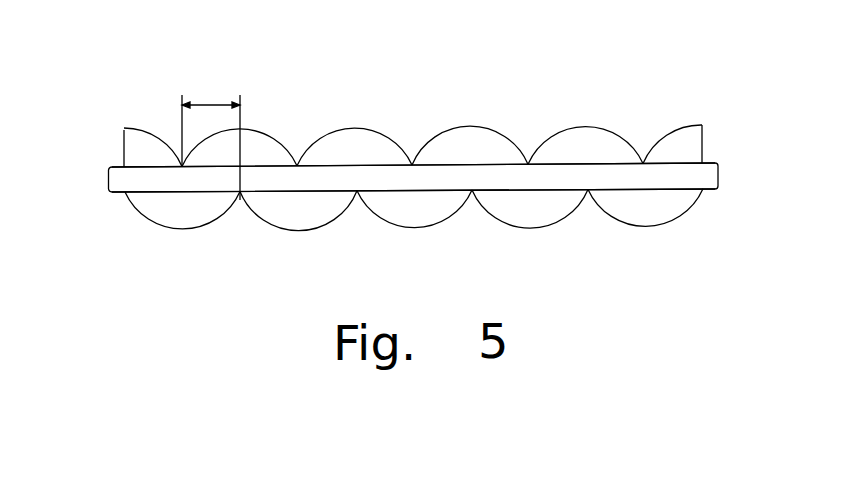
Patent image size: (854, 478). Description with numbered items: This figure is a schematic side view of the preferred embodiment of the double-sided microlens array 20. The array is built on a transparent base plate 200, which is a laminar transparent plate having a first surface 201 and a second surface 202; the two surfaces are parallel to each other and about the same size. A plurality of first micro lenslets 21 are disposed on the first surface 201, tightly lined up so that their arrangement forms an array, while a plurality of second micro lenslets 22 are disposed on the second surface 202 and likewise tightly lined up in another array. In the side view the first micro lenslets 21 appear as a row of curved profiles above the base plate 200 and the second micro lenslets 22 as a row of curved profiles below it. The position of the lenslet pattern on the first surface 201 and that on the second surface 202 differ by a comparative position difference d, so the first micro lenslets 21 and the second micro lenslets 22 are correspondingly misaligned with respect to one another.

The double-sided microlens array 20 is at (432, 154).
The transparent base plate 200 is at (697, 173).
The first surface 201 is at (118, 166).
The second surface 202 is at (113, 195).
The first micro lenslets 21 is at (262, 141).
The second micro lenslets 22 is at (293, 212).
The comparative position difference d is at (211, 136).